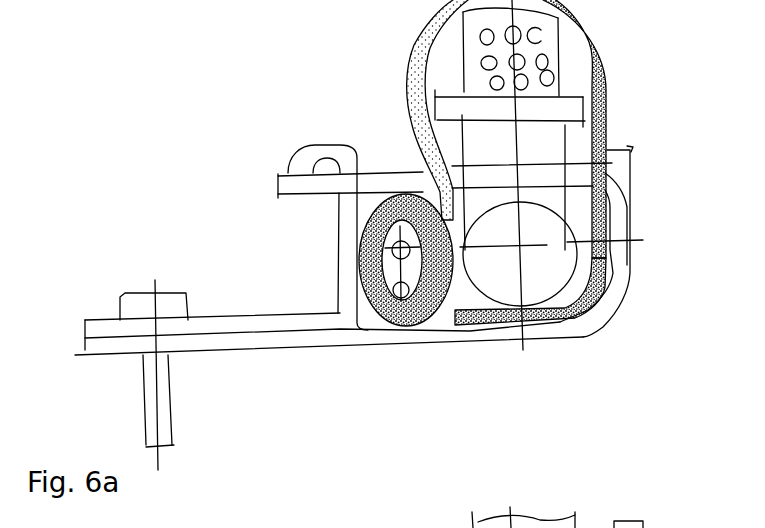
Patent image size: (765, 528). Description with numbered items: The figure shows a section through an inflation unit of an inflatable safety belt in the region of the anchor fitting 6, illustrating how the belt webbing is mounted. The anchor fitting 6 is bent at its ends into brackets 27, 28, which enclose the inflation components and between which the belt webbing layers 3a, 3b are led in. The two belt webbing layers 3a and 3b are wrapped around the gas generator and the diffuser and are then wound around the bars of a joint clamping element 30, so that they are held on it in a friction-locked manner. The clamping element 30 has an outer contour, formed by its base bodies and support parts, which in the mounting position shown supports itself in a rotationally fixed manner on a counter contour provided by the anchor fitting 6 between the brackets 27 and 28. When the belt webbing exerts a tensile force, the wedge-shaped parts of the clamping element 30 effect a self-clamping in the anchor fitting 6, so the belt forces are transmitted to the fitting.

The belt webbing layer 3a is at (413, 72).
The belt webbing layer 3b is at (600, 58).
The anchor fitting 6 is at (257, 372).
The bracket 27 is at (350, 238).
The bracket 28 is at (618, 221).
The clamping element 30 is at (465, 326).